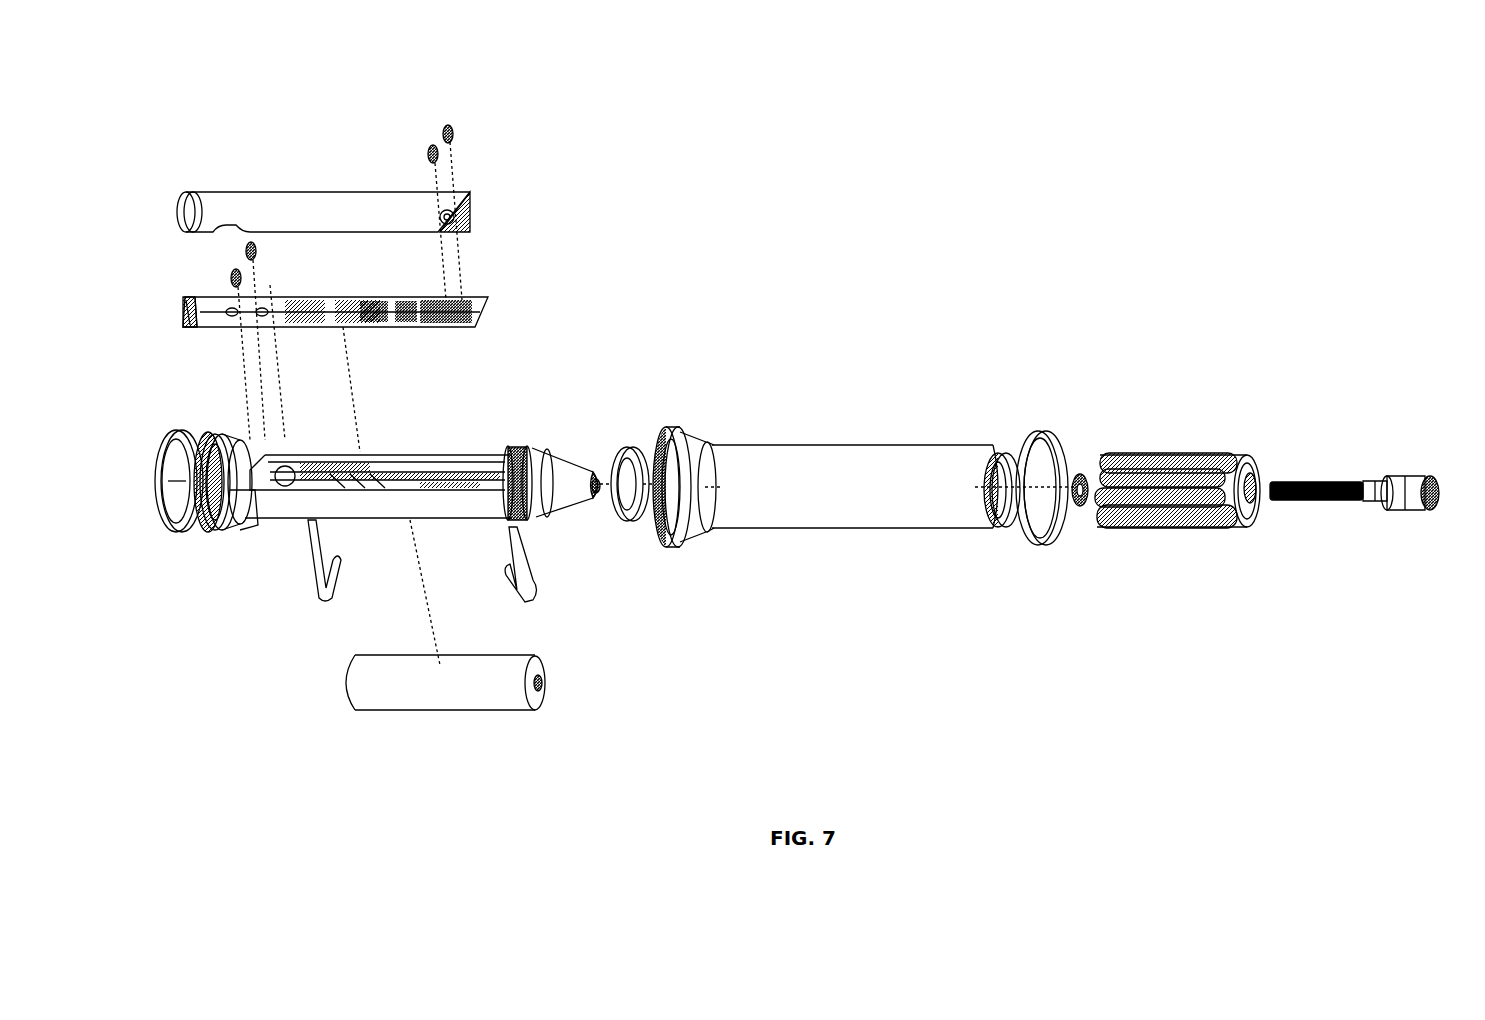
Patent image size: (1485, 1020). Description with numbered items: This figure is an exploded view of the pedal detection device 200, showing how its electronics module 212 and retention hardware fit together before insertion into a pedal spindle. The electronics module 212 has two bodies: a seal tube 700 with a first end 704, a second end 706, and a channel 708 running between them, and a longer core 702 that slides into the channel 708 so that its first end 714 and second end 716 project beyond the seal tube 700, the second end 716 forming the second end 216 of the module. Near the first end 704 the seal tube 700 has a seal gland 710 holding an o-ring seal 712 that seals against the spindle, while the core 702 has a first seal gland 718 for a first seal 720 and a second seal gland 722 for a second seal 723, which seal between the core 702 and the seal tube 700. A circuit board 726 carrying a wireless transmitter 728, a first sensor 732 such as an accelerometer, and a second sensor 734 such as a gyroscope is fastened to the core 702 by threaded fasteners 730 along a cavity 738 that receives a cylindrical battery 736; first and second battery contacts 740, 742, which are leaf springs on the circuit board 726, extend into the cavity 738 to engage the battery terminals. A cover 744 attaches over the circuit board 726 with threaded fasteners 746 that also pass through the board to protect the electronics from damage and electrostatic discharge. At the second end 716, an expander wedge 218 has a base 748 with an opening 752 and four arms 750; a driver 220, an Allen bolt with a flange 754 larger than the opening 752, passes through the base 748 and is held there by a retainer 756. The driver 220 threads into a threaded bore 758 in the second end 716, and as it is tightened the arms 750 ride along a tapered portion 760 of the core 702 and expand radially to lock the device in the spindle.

The pedal detection device 200 is at (245, 58).
The electronics module 212 is at (672, 258).
The second end 216 is at (597, 419).
The expander wedge 218 is at (1198, 465).
The driver 220 is at (1380, 492).
The seal tube 700 is at (867, 453).
The core 702 is at (410, 458).
The first end 704 is at (658, 463).
The second end 706 is at (1003, 470).
The channel 708 is at (1018, 447).
The seal gland 710 is at (680, 430).
The seal 712 is at (1052, 447).
The first end 714 is at (207, 455).
The second end 716 is at (593, 472).
The first seal gland 718 is at (228, 437).
The first seal 720 is at (162, 450).
The second seal gland 722 is at (522, 455).
The second seal 723 is at (625, 522).
The circuit board 726 is at (197, 320).
The wireless transmitter 728 is at (193, 302).
The threaded fasteners 730 is at (248, 250).
The first sensor 732 is at (377, 307).
The second sensor 734 is at (407, 307).
The battery 736 is at (437, 698).
The cavity 738 is at (358, 465).
The first battery contact 740 is at (317, 580).
The second battery contact 742 is at (513, 580).
The cover 744 is at (268, 203).
The threaded fasteners 746 is at (447, 132).
The base 748 is at (1248, 462).
The arms 750 is at (1128, 480).
The opening 752 is at (1253, 482).
The flange 754 is at (1417, 475).
The retainer 756 is at (1080, 507).
The threaded bore 758 is at (595, 492).
The tapered portion 760 is at (568, 495).